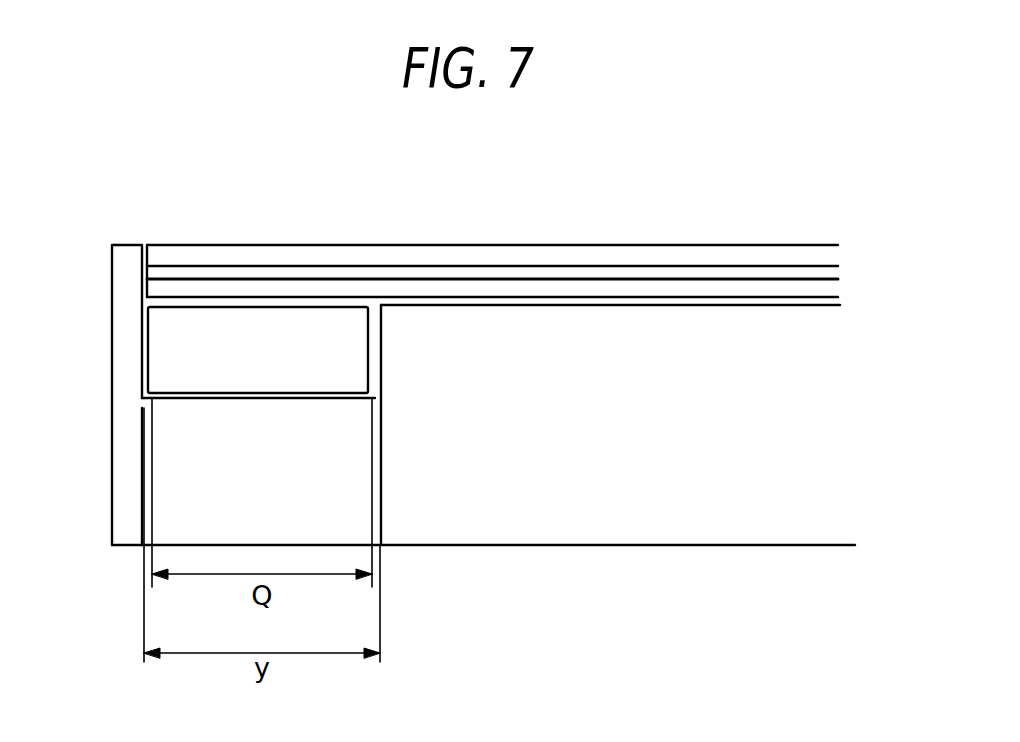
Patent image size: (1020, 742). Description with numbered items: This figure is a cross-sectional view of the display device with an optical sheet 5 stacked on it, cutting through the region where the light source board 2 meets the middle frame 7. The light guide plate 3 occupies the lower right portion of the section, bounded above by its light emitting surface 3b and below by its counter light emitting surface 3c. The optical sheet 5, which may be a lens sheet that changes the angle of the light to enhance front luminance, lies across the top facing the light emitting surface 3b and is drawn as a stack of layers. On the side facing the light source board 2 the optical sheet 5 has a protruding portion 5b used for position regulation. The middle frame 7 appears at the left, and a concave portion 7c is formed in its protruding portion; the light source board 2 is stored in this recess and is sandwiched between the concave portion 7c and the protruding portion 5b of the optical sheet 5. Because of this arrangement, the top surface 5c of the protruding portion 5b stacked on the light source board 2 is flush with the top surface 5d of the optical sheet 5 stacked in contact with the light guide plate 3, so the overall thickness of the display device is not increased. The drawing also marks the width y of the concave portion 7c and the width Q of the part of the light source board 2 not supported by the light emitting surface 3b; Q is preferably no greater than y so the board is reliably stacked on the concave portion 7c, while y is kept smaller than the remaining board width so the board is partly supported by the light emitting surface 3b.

The light source board 2 is at (165, 362).
The light guide plate 3 is at (483, 398).
The light emitting surface 3b is at (690, 305).
The counter light emitting surface 3c is at (555, 546).
The optical sheet 5 is at (518, 235).
The protruding portion 5b is at (193, 243).
The top surface of the protruding portion 5c is at (307, 243).
The top surface of the optical sheet 5d is at (552, 243).
The middle frame 7 is at (127, 473).
The concave portion 7c is at (375, 317).